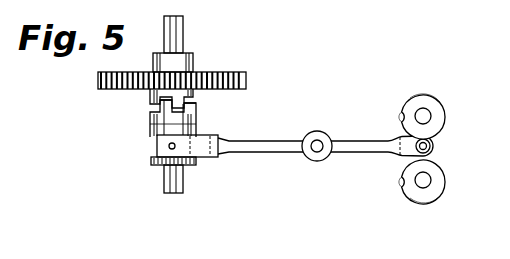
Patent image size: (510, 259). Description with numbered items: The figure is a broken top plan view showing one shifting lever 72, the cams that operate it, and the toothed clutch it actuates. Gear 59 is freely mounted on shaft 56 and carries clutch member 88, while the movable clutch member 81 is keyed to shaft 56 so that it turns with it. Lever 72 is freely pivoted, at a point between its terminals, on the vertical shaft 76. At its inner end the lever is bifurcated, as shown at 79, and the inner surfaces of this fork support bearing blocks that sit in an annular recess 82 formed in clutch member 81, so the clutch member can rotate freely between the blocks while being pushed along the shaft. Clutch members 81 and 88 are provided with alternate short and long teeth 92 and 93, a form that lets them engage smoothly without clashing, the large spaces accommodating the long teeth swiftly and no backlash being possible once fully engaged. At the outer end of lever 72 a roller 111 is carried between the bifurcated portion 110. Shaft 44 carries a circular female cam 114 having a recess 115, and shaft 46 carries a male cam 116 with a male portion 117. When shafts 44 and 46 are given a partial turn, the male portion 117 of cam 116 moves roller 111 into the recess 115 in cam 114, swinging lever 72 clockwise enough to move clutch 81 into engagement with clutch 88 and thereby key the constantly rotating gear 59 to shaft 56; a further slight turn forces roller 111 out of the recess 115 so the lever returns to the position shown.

The shaft 56 is at (183, 28).
The gear 59 is at (232, 72).
The clutch member 88 is at (149, 96).
The short teeth 92 is at (161, 107).
The long teeth 93 is at (151, 117).
The clutch member 81 is at (151, 128).
The annular recess 82 is at (151, 160).
The bifurcated inner end 79 is at (184, 150).
The lever 72 is at (272, 141).
The vertical shaft 76 is at (319, 141).
The roller 111 is at (402, 144).
The bifurcated portion 110 is at (400, 157).
The shaft 46 is at (432, 114).
The male cam 116 is at (428, 96).
The male portion 117 is at (398, 112).
The shaft 44 is at (432, 180).
The female cam 114 is at (438, 201).
The recess 115 is at (406, 181).